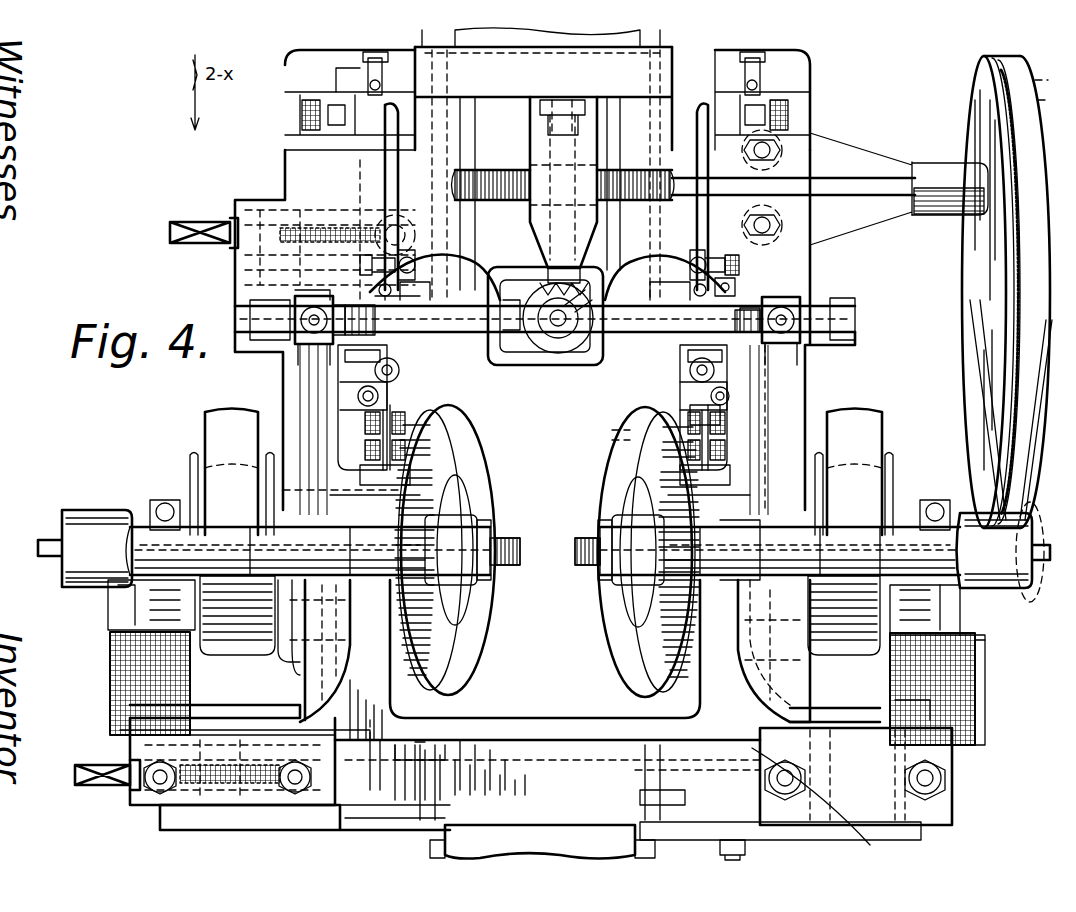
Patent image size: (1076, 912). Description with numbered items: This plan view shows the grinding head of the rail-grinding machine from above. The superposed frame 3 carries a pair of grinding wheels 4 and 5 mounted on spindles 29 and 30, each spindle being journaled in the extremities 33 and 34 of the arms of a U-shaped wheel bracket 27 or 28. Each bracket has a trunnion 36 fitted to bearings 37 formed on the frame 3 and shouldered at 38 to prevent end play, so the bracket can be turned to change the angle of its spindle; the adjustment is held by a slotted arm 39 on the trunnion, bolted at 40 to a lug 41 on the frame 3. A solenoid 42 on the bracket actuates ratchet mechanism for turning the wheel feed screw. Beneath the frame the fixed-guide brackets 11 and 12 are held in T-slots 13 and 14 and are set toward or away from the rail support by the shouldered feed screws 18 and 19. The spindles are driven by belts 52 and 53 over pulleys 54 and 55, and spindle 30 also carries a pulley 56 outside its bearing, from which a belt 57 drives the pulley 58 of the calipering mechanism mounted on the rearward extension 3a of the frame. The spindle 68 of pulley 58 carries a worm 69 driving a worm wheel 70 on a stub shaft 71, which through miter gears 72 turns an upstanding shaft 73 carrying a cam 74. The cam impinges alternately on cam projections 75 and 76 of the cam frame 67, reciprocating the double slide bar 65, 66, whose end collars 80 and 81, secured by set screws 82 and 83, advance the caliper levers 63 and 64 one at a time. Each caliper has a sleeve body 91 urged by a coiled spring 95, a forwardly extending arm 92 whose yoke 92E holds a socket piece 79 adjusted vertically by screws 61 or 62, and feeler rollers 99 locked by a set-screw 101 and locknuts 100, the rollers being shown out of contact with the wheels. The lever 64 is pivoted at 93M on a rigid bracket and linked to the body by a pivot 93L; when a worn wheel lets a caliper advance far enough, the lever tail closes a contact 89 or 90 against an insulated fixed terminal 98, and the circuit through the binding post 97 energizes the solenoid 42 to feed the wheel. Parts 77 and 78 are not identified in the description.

The frame 3 is at (547, 789).
The rearward extension of the frame 3a is at (800, 70).
The grinding wheel 4 is at (475, 436).
The grinding wheel 5 is at (605, 462).
The bracket 11 is at (360, 800).
The bracket 12 is at (375, 215).
The T-slot 13 is at (268, 750).
The T-slot 14 is at (300, 205).
The shouldered feed screw 18 is at (120, 785).
The shouldered feed screw 19 is at (245, 225).
The bracket 27 is at (115, 690).
The wheel bracket 28 is at (975, 655).
The spindle 29 is at (505, 538).
The spindle 30 is at (578, 538).
The bracket arm extremity 33 is at (760, 525).
The bracket arm extremity 34 is at (968, 512).
The trunnion 36 is at (623, 651).
The bearings 37 is at (548, 784).
The shoulder 38 is at (790, 712).
The slotted arm 39 is at (812, 838).
The bolt 40 is at (745, 852).
The lug 41 is at (655, 815).
The solenoid 42 is at (975, 710).
The belt 52 is at (250, 542).
The belt 53 is at (845, 532).
The pulley 54 is at (190, 470).
The pulley 55 is at (893, 480).
The pulley 56 is at (1035, 530).
The belt 57 is at (975, 395).
The pulley 58 is at (980, 275).
The screw 61 is at (392, 366).
The screw 62 is at (680, 366).
The caliper lever 63 is at (398, 140).
The caliper lever 64 is at (697, 145).
The slide bar 65 is at (285, 300).
The slide bar 66 is at (828, 348).
The cam frame 67 is at (550, 365).
The spindle 68 is at (862, 178).
The worm 69 is at (560, 200).
The worm wheel 70 is at (495, 172).
The stub shaft 71 is at (560, 238).
The miter gears 72 is at (575, 285).
The upstanding shaft 73 is at (556, 328).
The cam 74 is at (540, 345).
The cam projection 75 is at (515, 300).
The cam projection 76 is at (582, 335).
The left arm 77 is at (455, 262).
The right arm 78 is at (690, 272).
The socket piece 79 is at (400, 388).
The collar 80 is at (285, 305).
The collar 81 is at (800, 308).
The set screw 82 is at (305, 325).
The set screw 83 is at (420, 300).
The contact 89 is at (382, 100).
The contact 90 is at (742, 100).
The body 91 is at (724, 365).
The forwardly extending arm 92 is at (362, 438).
The yoke 92E is at (340, 360).
The pivot 93L is at (700, 250).
The pivot 93M is at (740, 262).
The coiled spring 95 is at (350, 335).
The binding post 97 is at (720, 308).
The insulated fixed terminal 98 is at (758, 82).
The feelers 99 is at (612, 436).
The locknuts 100 is at (385, 470).
The set-screw 101 is at (358, 396).